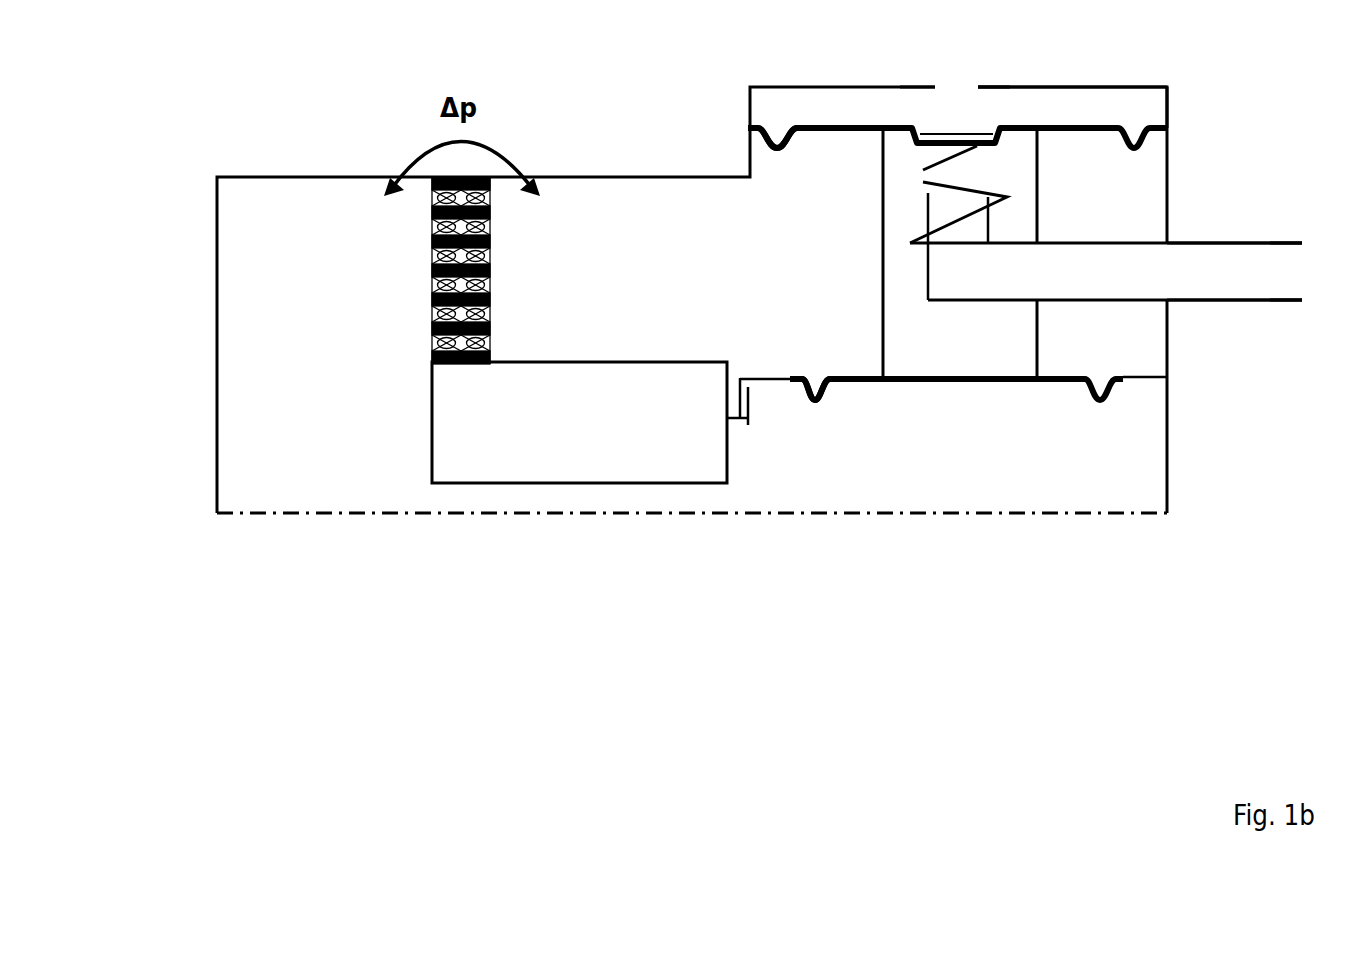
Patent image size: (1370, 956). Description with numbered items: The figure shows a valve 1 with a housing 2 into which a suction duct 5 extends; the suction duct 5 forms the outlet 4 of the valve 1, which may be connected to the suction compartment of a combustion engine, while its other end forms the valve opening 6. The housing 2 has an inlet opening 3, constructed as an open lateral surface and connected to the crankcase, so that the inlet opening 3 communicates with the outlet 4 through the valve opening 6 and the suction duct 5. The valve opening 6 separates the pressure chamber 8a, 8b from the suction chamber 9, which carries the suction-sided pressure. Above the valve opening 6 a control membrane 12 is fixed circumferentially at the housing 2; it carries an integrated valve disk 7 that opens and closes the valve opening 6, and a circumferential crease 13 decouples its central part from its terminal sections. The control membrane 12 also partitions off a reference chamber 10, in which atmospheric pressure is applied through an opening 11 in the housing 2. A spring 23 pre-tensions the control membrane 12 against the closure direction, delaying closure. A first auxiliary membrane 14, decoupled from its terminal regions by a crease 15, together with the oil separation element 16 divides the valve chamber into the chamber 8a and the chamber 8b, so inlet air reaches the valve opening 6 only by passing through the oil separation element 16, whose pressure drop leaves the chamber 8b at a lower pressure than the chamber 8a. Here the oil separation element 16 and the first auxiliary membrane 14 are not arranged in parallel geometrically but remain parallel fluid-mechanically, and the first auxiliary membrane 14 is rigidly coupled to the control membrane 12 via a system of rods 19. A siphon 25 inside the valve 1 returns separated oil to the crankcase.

The valve 1 is at (1196, 411).
The housing 2 is at (218, 263).
The inlet opening 3 is at (963, 513).
The outlet 4 is at (1285, 259).
The suction duct 5 is at (1105, 283).
The valve opening 6 is at (943, 202).
The valve disk 7 is at (927, 148).
The pressure chamber 8a is at (319, 383).
The pressure chamber 8b is at (604, 278).
The suction chamber 9 is at (1224, 283).
The reference chamber 10 is at (1167, 93).
The opening 11 is at (953, 82).
The control membrane 12 is at (838, 132).
The crease 13 is at (752, 138).
The first auxiliary membrane 14 is at (942, 383).
The crease 15 is at (827, 390).
The oil separation element 16 is at (432, 222).
The system of rods 19 is at (880, 262).
The spring 23 is at (962, 186).
The siphon 25 is at (748, 425).